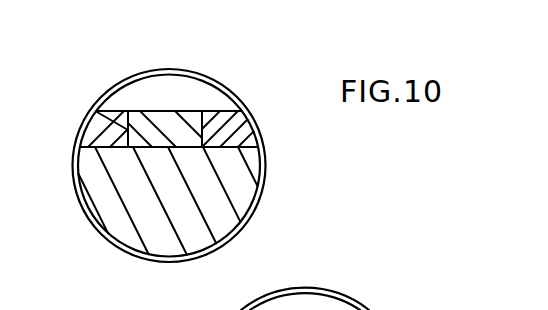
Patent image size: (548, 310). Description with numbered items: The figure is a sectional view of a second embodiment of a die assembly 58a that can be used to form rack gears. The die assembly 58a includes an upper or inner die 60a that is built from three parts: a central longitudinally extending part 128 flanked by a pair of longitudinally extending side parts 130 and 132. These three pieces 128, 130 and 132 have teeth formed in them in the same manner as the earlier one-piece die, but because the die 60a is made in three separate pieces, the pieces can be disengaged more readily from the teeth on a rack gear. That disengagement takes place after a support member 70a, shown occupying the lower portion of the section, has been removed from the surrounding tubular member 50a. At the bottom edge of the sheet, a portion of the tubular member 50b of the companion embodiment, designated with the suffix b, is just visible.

The tubular member 50a is at (143, 272).
The die assembly 58a is at (92, 235).
The upper or inner die 60a is at (264, 127).
The support member 70a is at (242, 188).
The central longitudinally extending part 128 is at (177, 111).
The longitudinally extending side part 130 is at (117, 111).
The longitudinally extending side part 132 is at (220, 111).
The tubular member 50b is at (339, 299).